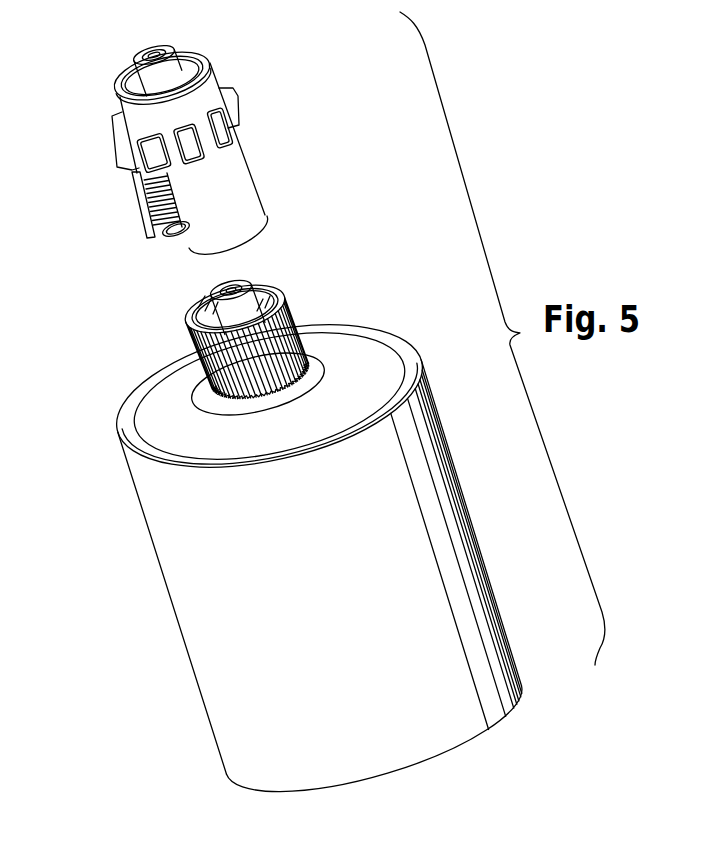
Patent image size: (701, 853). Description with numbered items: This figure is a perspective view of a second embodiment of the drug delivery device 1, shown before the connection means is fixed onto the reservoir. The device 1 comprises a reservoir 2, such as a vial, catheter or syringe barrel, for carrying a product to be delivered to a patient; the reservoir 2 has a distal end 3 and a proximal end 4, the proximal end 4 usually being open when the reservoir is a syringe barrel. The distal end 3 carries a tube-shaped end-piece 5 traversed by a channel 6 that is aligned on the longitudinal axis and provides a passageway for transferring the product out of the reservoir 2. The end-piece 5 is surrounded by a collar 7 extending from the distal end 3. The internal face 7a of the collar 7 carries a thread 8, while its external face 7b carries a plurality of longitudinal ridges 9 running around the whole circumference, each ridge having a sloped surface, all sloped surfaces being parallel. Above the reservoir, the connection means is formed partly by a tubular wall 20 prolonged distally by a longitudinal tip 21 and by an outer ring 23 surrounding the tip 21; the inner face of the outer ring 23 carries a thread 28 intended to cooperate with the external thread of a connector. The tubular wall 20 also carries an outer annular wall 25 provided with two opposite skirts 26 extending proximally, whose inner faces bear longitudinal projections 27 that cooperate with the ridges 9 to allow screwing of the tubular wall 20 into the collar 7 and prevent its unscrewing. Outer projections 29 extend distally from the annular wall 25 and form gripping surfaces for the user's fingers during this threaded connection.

The drug delivery device 1 is at (99, 398).
The reservoir 2 is at (168, 607).
The distal end 3 is at (405, 322).
The proximal end 4 is at (404, 778).
The end-piece 5 is at (243, 305).
The channel 6 is at (231, 287).
The collar 7 is at (303, 292).
The internal face 7a is at (200, 303).
The external face 7b is at (300, 312).
The thread 8 is at (195, 308).
The longitudinal ridges 9 is at (233, 364).
The tubular wall 20 is at (277, 137).
The longitudinal tip 21 is at (145, 72).
The outer ring 23 is at (115, 100).
The outer annular wall 25 is at (130, 172).
The skirts 26 is at (265, 192).
The longitudinal projections 27 is at (167, 242).
The thread 28 is at (177, 55).
The outer projections 29 is at (230, 118).